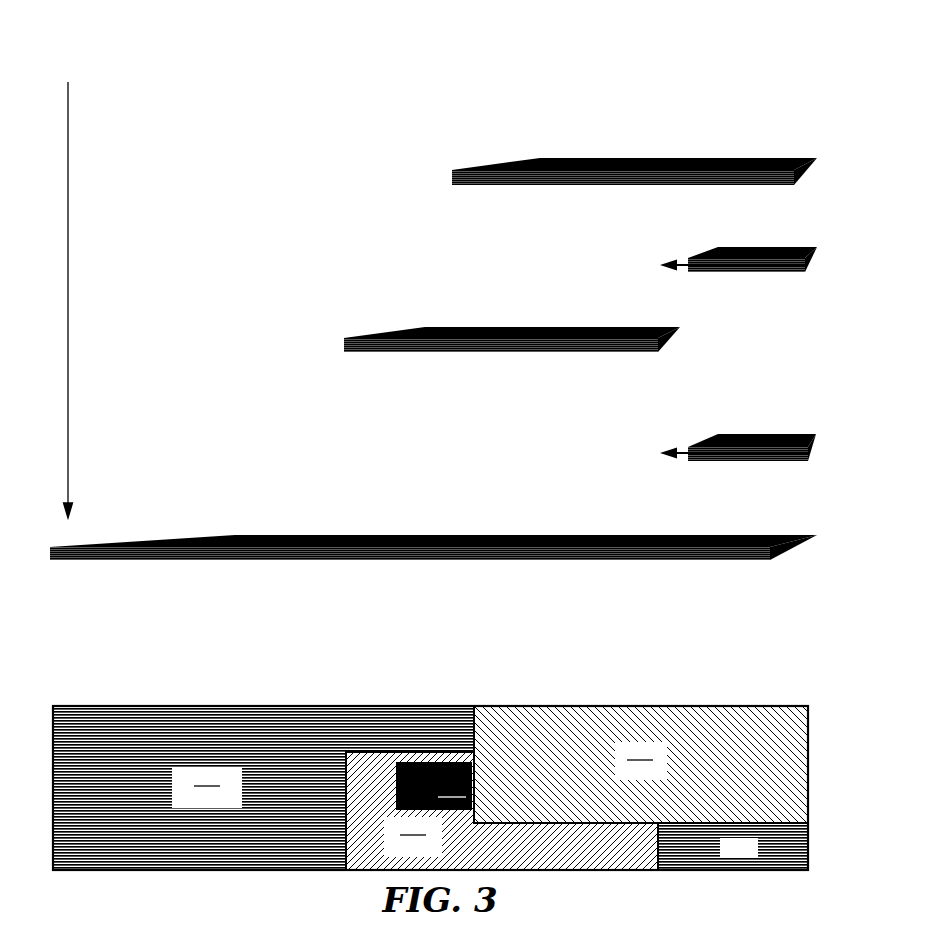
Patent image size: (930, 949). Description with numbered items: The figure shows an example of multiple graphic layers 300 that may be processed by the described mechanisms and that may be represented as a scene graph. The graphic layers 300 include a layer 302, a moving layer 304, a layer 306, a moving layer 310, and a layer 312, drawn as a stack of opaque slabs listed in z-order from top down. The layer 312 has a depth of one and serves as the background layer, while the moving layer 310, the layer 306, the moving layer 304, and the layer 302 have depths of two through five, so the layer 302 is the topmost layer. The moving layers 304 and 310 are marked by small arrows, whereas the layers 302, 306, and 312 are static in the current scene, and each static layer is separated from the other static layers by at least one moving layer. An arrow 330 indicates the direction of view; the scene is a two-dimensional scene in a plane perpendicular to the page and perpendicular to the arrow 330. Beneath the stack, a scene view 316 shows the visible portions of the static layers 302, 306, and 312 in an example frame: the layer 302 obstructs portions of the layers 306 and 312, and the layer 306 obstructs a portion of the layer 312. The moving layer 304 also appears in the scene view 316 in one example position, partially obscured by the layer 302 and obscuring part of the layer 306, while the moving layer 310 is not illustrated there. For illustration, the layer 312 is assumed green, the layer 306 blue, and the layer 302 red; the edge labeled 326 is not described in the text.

The graphic layers 300 is at (157, 24).
The layer 302 is at (758, 158).
The moving layer 304 is at (715, 272).
The layer 306 is at (405, 327).
The moving layer 310 is at (760, 436).
The layer 312 is at (113, 560).
The scene view 316 is at (325, 705).
The top surface of red layer 326 is at (585, 705).
The arrow 330 is at (68, 212).